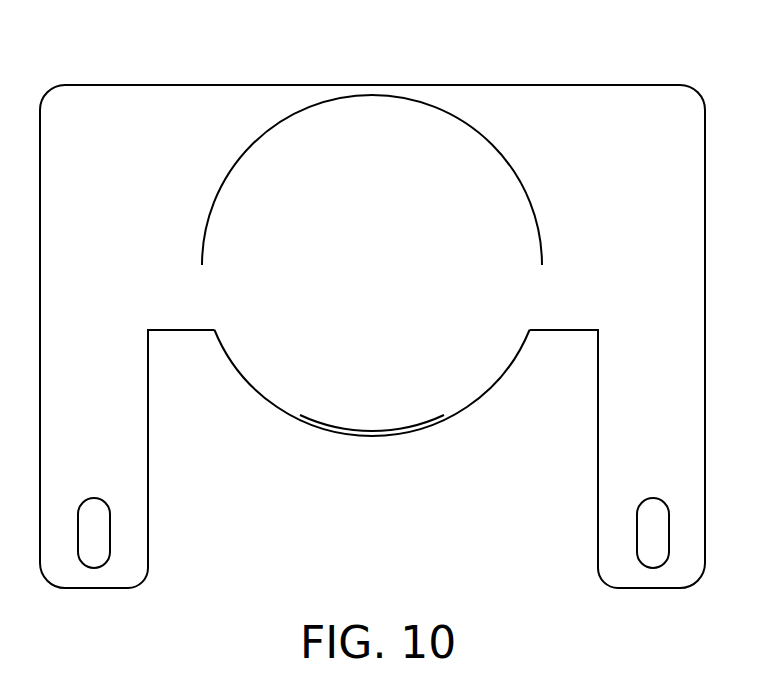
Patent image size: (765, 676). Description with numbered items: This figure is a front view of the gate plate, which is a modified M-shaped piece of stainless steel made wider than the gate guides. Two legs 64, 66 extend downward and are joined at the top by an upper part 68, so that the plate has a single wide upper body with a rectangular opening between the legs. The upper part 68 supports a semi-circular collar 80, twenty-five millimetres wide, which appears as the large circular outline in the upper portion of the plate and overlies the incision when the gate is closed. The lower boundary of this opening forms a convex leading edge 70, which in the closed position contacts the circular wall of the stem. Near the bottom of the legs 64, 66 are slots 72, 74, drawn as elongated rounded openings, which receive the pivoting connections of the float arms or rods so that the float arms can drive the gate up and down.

The upper part 68 is at (500, 110).
The semi-circular collar 80 is at (520, 180).
The convex leading edge 70 is at (370, 440).
The leg 64 is at (128, 468).
The leg 66 is at (598, 477).
The slot 72 is at (86, 556).
The slot 74 is at (638, 556).